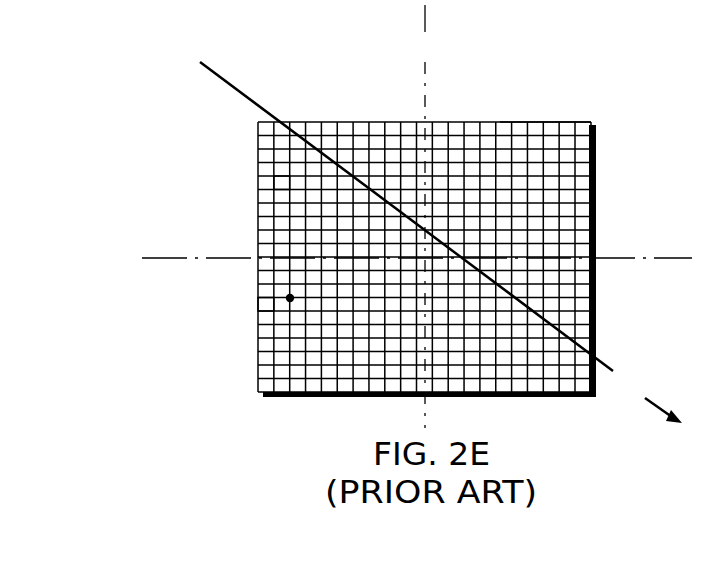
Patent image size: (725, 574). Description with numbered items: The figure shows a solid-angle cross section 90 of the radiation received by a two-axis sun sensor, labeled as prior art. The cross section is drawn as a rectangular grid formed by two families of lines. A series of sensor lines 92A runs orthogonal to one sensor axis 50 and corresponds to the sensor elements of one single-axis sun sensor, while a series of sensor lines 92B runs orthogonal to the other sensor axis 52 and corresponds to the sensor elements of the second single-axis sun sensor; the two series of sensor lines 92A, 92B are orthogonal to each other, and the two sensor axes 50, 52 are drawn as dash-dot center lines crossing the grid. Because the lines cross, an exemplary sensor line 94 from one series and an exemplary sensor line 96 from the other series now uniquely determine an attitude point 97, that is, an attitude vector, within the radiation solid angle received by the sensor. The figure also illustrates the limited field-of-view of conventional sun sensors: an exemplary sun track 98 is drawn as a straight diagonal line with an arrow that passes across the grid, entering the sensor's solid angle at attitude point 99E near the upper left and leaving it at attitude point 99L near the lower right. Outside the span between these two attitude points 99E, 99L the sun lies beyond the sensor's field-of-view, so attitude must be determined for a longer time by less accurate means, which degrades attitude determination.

The solid-angle cross section 90 is at (359, 122).
The sensor lines 92A is at (533, 134).
The sensor lines 92B is at (575, 193).
The sensor axis 50 is at (425, 216).
The sensor axis 52 is at (432, 258).
The sensor line 94 is at (290, 186).
The sensor line 96 is at (267, 300).
The attitude point 97 is at (288, 296).
The sun track 98 is at (647, 398).
The attitude point 99E is at (291, 125).
The attitude point 99L is at (596, 360).